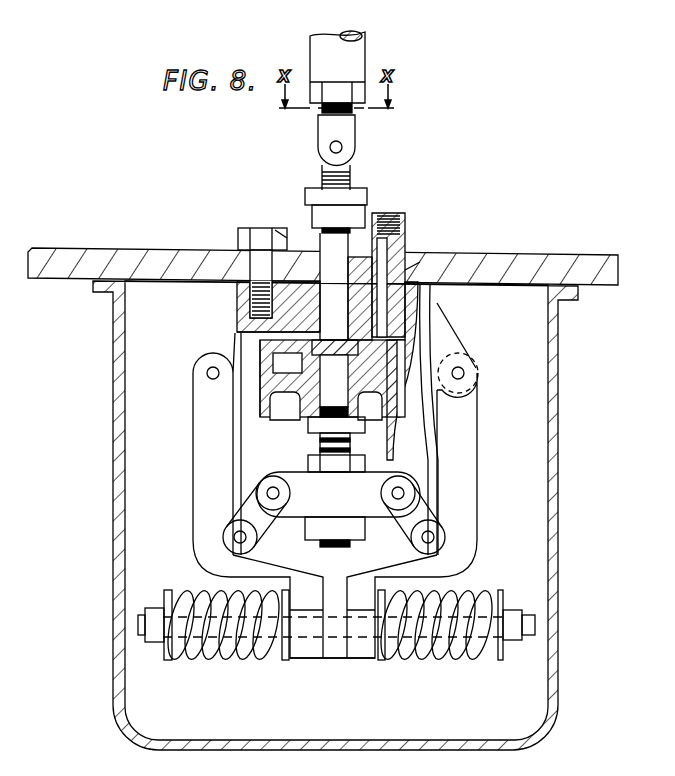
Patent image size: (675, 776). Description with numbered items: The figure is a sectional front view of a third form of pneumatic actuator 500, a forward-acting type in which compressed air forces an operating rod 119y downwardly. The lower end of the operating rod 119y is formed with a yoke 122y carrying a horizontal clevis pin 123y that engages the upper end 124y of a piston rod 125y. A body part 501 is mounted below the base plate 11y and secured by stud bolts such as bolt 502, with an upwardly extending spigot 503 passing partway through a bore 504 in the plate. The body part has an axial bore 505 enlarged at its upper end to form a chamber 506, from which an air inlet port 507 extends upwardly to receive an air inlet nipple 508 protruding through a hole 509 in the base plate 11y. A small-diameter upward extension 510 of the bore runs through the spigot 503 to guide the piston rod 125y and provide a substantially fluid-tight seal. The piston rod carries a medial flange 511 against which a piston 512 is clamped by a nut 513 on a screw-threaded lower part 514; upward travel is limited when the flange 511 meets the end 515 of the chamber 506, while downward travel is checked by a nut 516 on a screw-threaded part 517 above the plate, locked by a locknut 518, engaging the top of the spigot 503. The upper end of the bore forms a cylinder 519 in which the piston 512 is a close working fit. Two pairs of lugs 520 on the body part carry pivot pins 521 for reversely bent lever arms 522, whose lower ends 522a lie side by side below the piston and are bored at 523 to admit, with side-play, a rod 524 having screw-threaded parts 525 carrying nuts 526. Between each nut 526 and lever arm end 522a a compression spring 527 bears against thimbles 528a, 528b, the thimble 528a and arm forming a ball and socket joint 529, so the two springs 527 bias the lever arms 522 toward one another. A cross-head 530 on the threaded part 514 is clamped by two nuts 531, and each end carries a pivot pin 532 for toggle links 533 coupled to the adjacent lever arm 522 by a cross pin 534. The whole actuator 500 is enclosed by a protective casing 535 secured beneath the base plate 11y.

The base plate 11y is at (126, 262).
The operating rod 119y is at (336, 94).
The yoke 122y is at (344, 124).
The clevis pin 123y is at (343, 147).
The upper end of piston rod 124y is at (322, 167).
The piston rod 125y is at (322, 258).
The pneumatic actuator 500 is at (430, 322).
The body part 501 is at (237, 291).
The stud bolt 502 is at (262, 237).
The spigot 503 is at (278, 236).
The bore 504 is at (266, 253).
The axial bore 505 is at (310, 443).
The chamber 506 is at (262, 335).
The air inlet port 507 is at (390, 318).
The air inlet nipple 508 is at (395, 233).
The hole 509 is at (406, 270).
The upward extension of bore 510 is at (288, 363).
The medial flange 511 is at (333, 345).
The piston 512 is at (300, 397).
The nut 513 is at (345, 424).
The screw-threaded lower part 514 is at (351, 446).
The end of chamber 515 is at (374, 318).
The nut 516 is at (352, 219).
The screw-threaded part 517 is at (351, 179).
The locknut 518 is at (362, 197).
The cylinder 519 is at (262, 397).
The lugs 520 is at (240, 318).
The pivot pin 521 is at (210, 371).
The lever arm 522 is at (208, 448).
The lower end of lever arm 522a is at (300, 657).
The bore 523 is at (333, 525).
The rod 524 is at (336, 625).
The screw-threaded part 525 is at (140, 628).
The nut 526 is at (156, 643).
The compression spring 527 is at (218, 607).
The thimble 528a is at (281, 655).
The thimble 528b is at (210, 655).
The ball and socket joint 529 is at (348, 660).
The cross-head 530 is at (351, 508).
The nuts 531 is at (333, 467).
The pivot pin 532 is at (403, 493).
The toggle links 533 is at (258, 504).
The cross pin 534 is at (234, 537).
The protective casing 535 is at (551, 403).